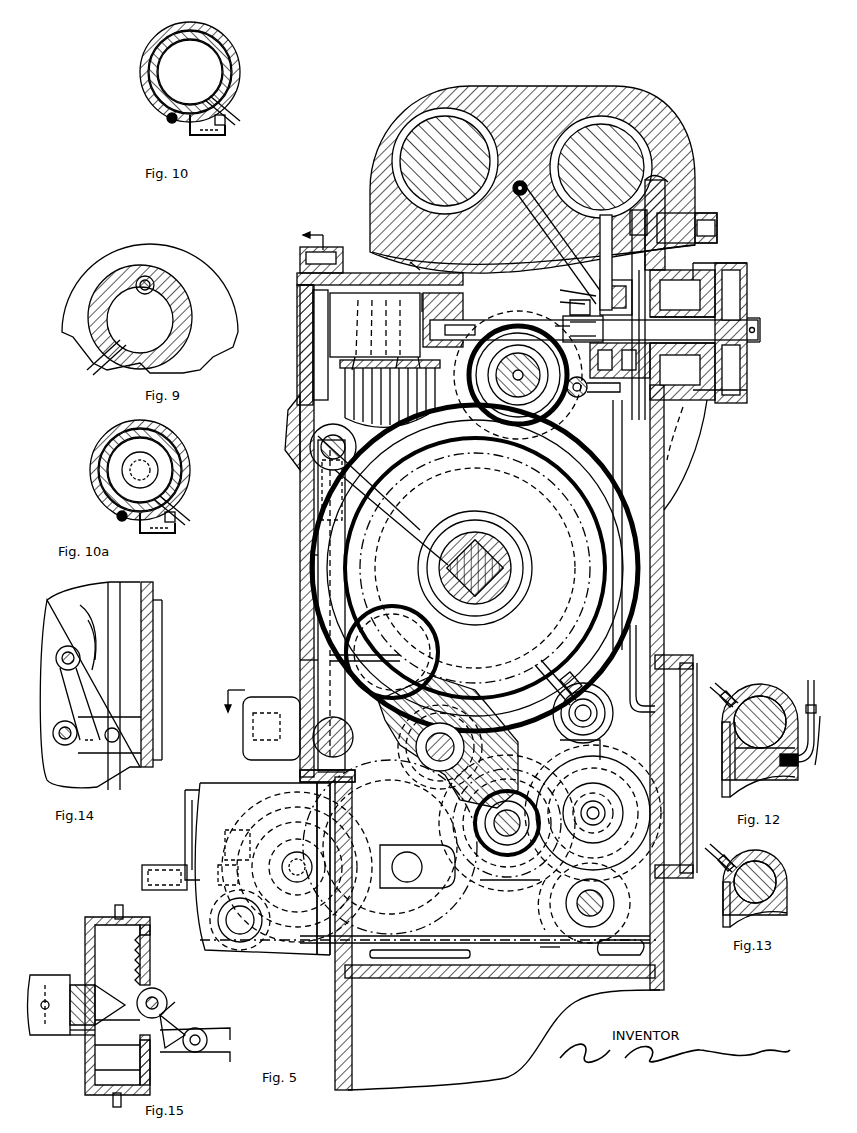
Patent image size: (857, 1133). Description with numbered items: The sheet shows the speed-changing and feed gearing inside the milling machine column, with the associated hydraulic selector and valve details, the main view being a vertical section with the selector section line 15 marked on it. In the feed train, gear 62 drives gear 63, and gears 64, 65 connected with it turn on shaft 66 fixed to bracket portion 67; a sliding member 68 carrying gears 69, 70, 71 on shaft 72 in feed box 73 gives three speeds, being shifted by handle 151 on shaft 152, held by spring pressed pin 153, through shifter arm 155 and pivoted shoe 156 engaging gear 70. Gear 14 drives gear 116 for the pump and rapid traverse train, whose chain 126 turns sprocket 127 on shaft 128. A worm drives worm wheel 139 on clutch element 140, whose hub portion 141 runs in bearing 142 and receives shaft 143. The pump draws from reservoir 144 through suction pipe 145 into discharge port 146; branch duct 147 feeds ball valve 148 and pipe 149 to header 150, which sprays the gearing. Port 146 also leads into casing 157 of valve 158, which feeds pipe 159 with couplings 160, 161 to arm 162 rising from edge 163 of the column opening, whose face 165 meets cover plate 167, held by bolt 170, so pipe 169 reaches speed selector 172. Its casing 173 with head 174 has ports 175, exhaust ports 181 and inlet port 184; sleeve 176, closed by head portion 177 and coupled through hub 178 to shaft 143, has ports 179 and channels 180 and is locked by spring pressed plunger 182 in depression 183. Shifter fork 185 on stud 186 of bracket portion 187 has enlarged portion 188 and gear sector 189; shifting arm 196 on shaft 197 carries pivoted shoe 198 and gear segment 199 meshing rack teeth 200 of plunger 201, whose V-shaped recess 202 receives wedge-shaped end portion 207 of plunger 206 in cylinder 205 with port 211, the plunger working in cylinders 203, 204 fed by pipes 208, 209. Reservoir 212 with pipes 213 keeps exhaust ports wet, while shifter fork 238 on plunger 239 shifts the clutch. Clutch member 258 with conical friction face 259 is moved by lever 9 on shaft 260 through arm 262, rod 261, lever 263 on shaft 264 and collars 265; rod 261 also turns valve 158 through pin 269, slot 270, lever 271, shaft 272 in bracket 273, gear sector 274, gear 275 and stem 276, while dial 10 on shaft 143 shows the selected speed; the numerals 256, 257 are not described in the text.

In FIG. 5, the lever 9 is at (318, 239).
In FIG. 5, the dial 10 is at (413, 260).
In FIG. 5, the gear 14 is at (557, 904).
In FIG. 5, the section line 15— 15 is at (229, 697).
In FIG. 5, the gear 62 is at (507, 815).
In FIG. 5, the gear 63 is at (416, 953).
In FIG. 5, the gear 64 is at (507, 827).
In FIG. 5, the gear 65 is at (574, 830).
In FIG. 5, the shaft 66 is at (415, 866).
In FIG. 5, the bracket portion 67 is at (590, 903).
In FIG. 5, the member 68 is at (297, 930).
In FIG. 5, the gear 69 is at (297, 867).
In FIG. 5, the gear 70 is at (300, 782).
In FIG. 5, the gear 71 is at (297, 866).
In FIG. 5, the shaft 72 is at (295, 874).
In FIG. 5, the feed box 73 is at (275, 962).
In FIG. 5, the gear 116 is at (542, 953).
In FIG. 5, the chain 126 is at (430, 945).
In FIG. 5, the sprocket 127 is at (220, 928).
In FIG. 5, the shaft 128 is at (228, 912).
In FIG. 5, the worm wheel 139 is at (630, 285).
In FIG. 5, the clutch element 140 is at (619, 292).
In FIG. 5, the hub portion 141 is at (682, 339).
In FIG. 5, the bearing 142 is at (652, 300).
In FIG. 5, the shaft 143 is at (682, 351).
In FIG. 5, the reservoir 144 is at (450, 978).
In FIG. 5, the suction pipe 145 is at (650, 950).
In FIG. 5, the discharge port 146 is at (575, 738).
In FIG. 12, the discharge port 146 is at (724, 785).
In FIG. 13, the discharge port 146 is at (723, 910).
In FIG. 5, the branch duct 147 is at (575, 760).
In FIG. 12, the branch duct 147 is at (735, 740).
In FIG. 13, the branch duct 147 is at (765, 915).
In FIG. 12, the ball valve 148 is at (780, 745).
In FIG. 5, the pipe 149 is at (664, 618).
In FIG. 12, the pipe 149 is at (808, 680).
In FIG. 5, the header 150 is at (521, 182).
In FIG. 5, the handle 151 is at (185, 829).
In FIG. 5, the shaft 152 is at (207, 795).
In FIG. 5, the spring pressed pin 153 is at (180, 865).
In FIG. 5, the shifter arm 155 is at (247, 844).
In FIG. 5, the pivoted shoe 156 is at (225, 878).
In FIG. 5, the casing 157 is at (588, 700).
In FIG. 12, the casing 157 is at (748, 690).
In FIG. 12, the valve 158 is at (763, 700).
In FIG. 5, the pipe 159 is at (505, 655).
In FIG. 12, the pipe 159 is at (716, 684).
In FIG. 13, the pipe 159 is at (716, 858).
In FIG. 5, the coupling 160 is at (569, 676).
In FIG. 12, the coupling 160 is at (726, 708).
In FIG. 13, the coupling 160 is at (728, 862).
In FIG. 5, the coupling 161 is at (663, 751).
In FIG. 12, the coupling 161 is at (817, 748).
In FIG. 5, the arm 162 is at (300, 664).
In FIG. 5, the lower edge 163 is at (300, 770).
In FIG. 5, the face 165 is at (300, 620).
In FIG. 5, the cover plate 167 is at (314, 554).
In FIG. 5, the pipe 169 is at (300, 404).
In FIG. 9, the pipe 169 is at (103, 368).
In FIG. 5, the bolt 170 is at (318, 650).
In FIG. 5, the speed selector 172 is at (330, 316).
In FIG. 5, the casing 173 is at (430, 280).
In FIG. 5, the head 174 is at (456, 305).
In FIG. 5, the port 175 is at (430, 353).
In FIG. 10, the port 175 is at (234, 108).
In FIG. 10A, the port 175 is at (185, 507).
In FIG. 5, the sleeve 176 is at (362, 303).
In FIG. 10, the sleeve 176 is at (217, 47).
In FIG. 10A, the sleeve 176 is at (158, 437).
In FIG. 5, the head portion 177 is at (425, 301).
In FIG. 5, the hub 178 is at (468, 320).
In FIG. 5, the port 179 is at (364, 353).
In FIG. 10, the port 179 is at (236, 55).
In FIG. 10A, the port 179 is at (178, 445).
In FIG. 10, the channel 180 is at (236, 78).
In FIG. 10A, the channel 180 is at (185, 460).
In FIG. 5, the exhaust port 181 is at (404, 352).
In FIG. 10, the exhaust port 181 is at (200, 138).
In FIG. 10A, the exhaust port 181 is at (146, 530).
In FIG. 5, the spring pressed plunger 182 is at (305, 272).
In FIG. 9, the spring pressed plunger 182 is at (147, 285).
In FIG. 5, the depression 183 is at (322, 352).
In FIG. 5, the port 184 is at (340, 378).
In FIG. 5, the shifter fork 185 is at (496, 826).
In FIG. 5, the stud 186 is at (470, 845).
In FIG. 5, the bracket portion 187 is at (390, 847).
In FIG. 5, the enlarged portion 188 is at (510, 878).
In FIG. 5, the gear sector 189 is at (384, 652).
In FIG. 5, the shifting arm 196 is at (433, 747).
In FIG. 15, the shifting arm 196 is at (180, 1020).
In FIG. 5, the shaft 197 is at (312, 640).
In FIG. 5, the pivoted shoe 198 is at (428, 735).
In FIG. 15, the gear segment 199 is at (165, 992).
In FIG. 15, the rack teeth 200 is at (145, 975).
In FIG. 15, the plunger 201 is at (150, 955).
In FIG. 15, the V-shaped recess 202 is at (90, 975).
In FIG. 15, the cylinder 203 is at (95, 1075).
In FIG. 15, the cylinder 204 is at (90, 922).
In FIG. 15, the cylinder 205 is at (75, 1040).
In FIG. 15, the plunger 206 is at (75, 1035).
In FIG. 15, the wedge-shaped end portion 207 is at (117, 1028).
In FIG. 15, the pipe 208 is at (113, 1102).
In FIG. 15, the pipe 209 is at (117, 906).
In FIG. 15, the port 211 is at (47, 980).
In FIG. 10, the reservoir 212 is at (220, 140).
In FIG. 10A, the reservoir 212 is at (172, 534).
In FIG. 10, the pipe 213 is at (228, 118).
In FIG. 10A, the pipe 213 is at (175, 522).
In FIG. 5, the shifter fork 238 is at (420, 512).
In FIG. 5, the plunger 239 is at (379, 494).
In FIG. 5, the spring 256 is at (550, 323).
In FIG. 5, the spring 257 is at (564, 309).
In FIG. 5, the clutch member 258 is at (561, 300).
In FIG. 5, the conical friction face 259 is at (567, 288).
In FIG. 5, the shaft 260 is at (717, 230).
In FIG. 5, the rod 261 is at (614, 262).
In FIG. 14, the rod 261 is at (153, 631).
In FIG. 5, the arm 262 is at (670, 192).
In FIG. 5, the lever 263 is at (613, 430).
In FIG. 5, the shaft 264 is at (579, 396).
In FIG. 5, the adjustable collar 265 is at (655, 365).
In FIG. 14, the pin 269 is at (112, 718).
In FIG. 14, the slot 270 is at (127, 738).
In FIG. 14, the lever 271 is at (92, 744).
In FIG. 14, the shaft 272 is at (72, 700).
In FIG. 14, the bracket 273 is at (65, 745).
In FIG. 14, the gear sector 274 is at (89, 626).
In FIG. 14, the gear 275 is at (80, 638).
In FIG. 14, the stem 276 is at (68, 646).